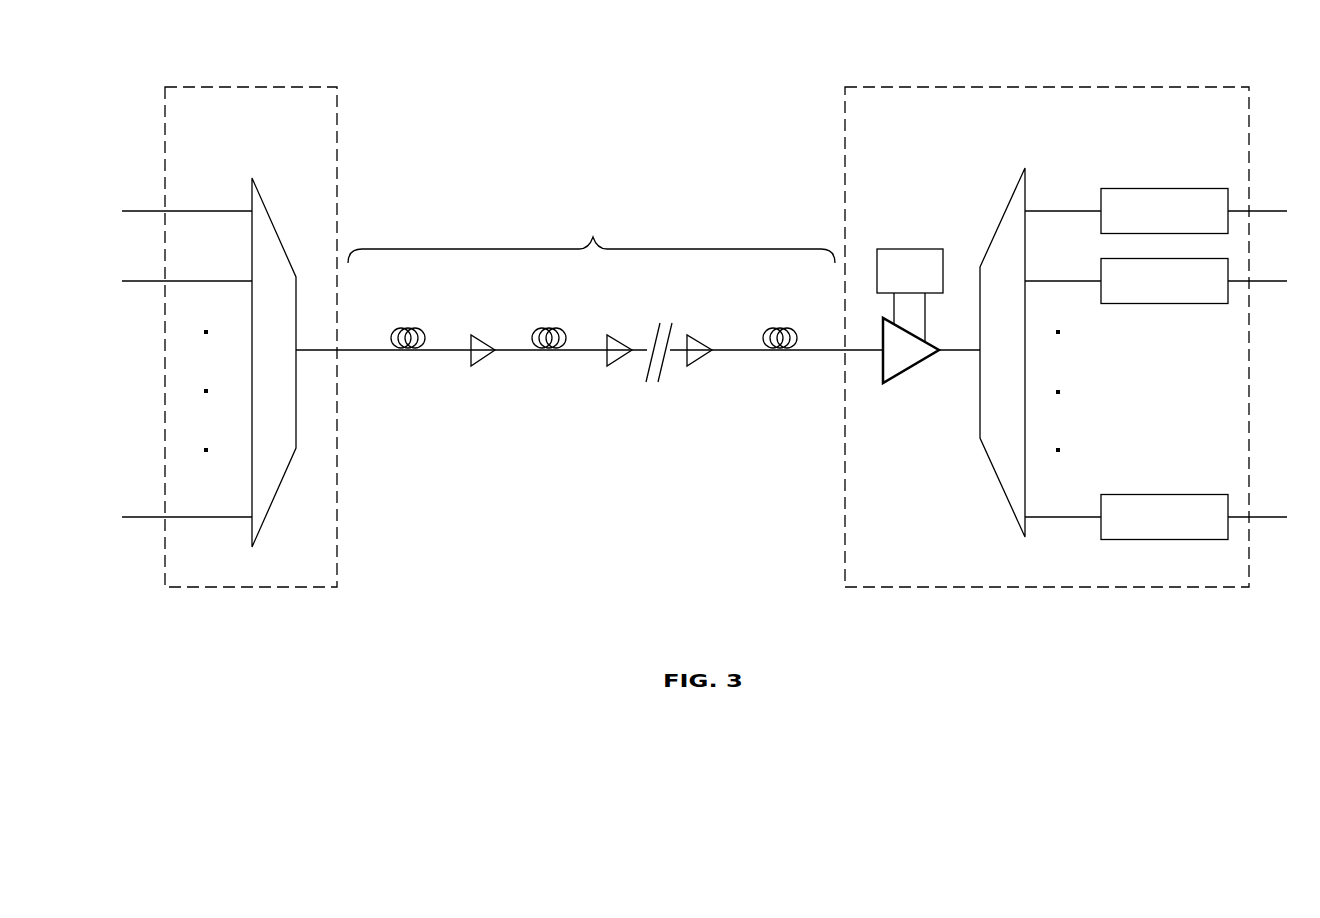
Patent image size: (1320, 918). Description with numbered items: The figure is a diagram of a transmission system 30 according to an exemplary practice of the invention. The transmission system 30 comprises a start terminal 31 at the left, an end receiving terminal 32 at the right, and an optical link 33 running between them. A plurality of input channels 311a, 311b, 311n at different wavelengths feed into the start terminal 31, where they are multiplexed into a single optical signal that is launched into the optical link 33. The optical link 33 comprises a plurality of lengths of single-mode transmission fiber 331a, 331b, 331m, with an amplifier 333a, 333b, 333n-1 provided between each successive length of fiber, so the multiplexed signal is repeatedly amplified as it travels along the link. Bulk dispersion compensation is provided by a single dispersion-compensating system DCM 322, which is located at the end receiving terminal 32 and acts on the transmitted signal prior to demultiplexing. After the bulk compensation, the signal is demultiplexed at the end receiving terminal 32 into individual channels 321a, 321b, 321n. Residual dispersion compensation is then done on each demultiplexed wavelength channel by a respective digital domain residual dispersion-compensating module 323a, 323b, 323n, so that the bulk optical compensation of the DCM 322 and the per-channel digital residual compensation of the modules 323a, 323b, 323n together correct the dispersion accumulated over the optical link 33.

The transmission system 30 is at (691, 39).
The start terminal 31 is at (313, 138).
The end receiving terminal 32 is at (1112, 138).
The optical link 33 is at (591, 235).
The input channel 311a is at (230, 206).
The input channel 311b is at (230, 276).
The input channel 311n is at (232, 512).
The individual channel 321a is at (1083, 208).
The individual channel 321b is at (1083, 278).
The individual channel 321n is at (1085, 514).
The dispersion-compensating system DCM 322 is at (894, 246).
The digital domain residual dispersion-compensating module 323a is at (1143, 184).
The digital domain residual dispersion-compensating module 323b is at (1143, 326).
The digital domain residual dispersion-compensating module 323n is at (1187, 492).
The single-mode transmission fiber 331a is at (431, 318).
The single-mode transmission fiber 331b is at (571, 318).
The single-mode transmission fiber 331m is at (753, 318).
The amplifier 333a is at (459, 390).
The amplifier 333b is at (597, 390).
The amplifier 333n-1 is at (673, 390).